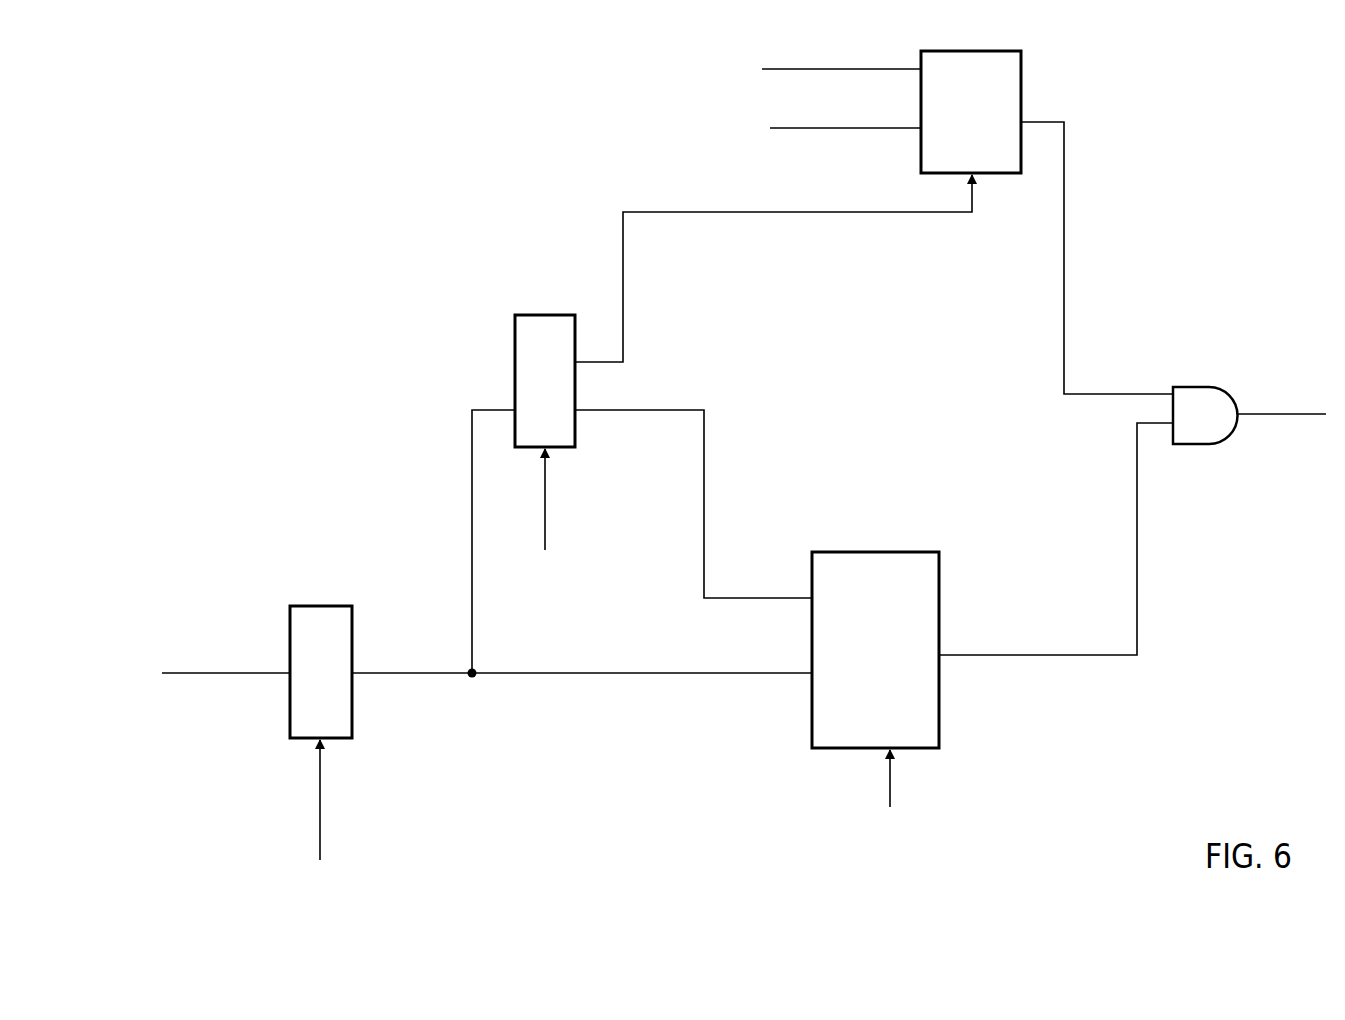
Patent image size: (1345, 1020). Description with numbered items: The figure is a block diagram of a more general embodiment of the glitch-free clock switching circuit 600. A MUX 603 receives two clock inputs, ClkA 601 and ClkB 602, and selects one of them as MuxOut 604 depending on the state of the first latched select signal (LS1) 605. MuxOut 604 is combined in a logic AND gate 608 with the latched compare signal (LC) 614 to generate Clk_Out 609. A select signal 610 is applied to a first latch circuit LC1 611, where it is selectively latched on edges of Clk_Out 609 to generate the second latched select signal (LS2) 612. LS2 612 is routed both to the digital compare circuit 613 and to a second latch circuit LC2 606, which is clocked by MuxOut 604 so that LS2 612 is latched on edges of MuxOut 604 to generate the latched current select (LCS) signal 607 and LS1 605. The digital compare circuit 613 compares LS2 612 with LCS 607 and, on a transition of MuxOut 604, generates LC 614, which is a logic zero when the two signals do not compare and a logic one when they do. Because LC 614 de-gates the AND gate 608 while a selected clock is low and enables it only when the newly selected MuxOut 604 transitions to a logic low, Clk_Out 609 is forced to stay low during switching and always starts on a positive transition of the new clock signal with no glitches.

The clock switching circuit 600 is at (470, 160).
The ClkA 601 is at (770, 68).
The ClkB 602 is at (775, 127).
The MUX 603 is at (965, 48).
The MuxOut 604 is at (1065, 190).
The first latched select signal (LS1) 605 is at (737, 212).
The second latch circuit LC2 606 is at (545, 315).
The latched current select (LCS) signal 607 is at (704, 420).
The logic AND gate 608 is at (1193, 387).
The Clk_Out 609 is at (1254, 411).
The select signal 610 is at (232, 673).
The latch circuit LC1 611 is at (322, 606).
The second latched select signal (LS2) 612 is at (663, 675).
The digital compare circuit 613 is at (875, 552).
The latched compare signal (LC) 614 is at (1123, 658).